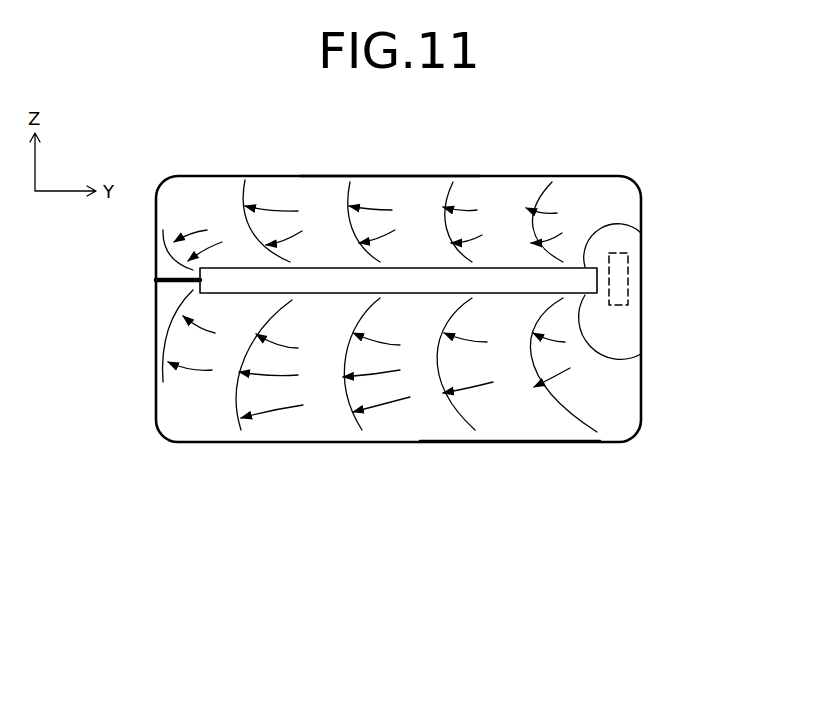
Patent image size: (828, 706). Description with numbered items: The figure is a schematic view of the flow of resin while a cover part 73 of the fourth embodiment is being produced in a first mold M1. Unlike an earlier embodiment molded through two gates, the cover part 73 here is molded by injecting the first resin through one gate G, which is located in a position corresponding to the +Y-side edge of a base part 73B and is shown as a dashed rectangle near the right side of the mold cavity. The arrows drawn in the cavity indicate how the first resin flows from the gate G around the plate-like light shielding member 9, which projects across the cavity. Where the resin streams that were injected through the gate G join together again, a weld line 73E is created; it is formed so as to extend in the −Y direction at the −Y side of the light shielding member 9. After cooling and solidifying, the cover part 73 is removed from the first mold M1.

The cover part 73 is at (497, 175).
The base part 73B is at (568, 443).
The weld line 73E is at (176, 278).
The first mold M1 is at (383, 176).
The light shielding member 9 is at (342, 288).
The gate G is at (620, 253).